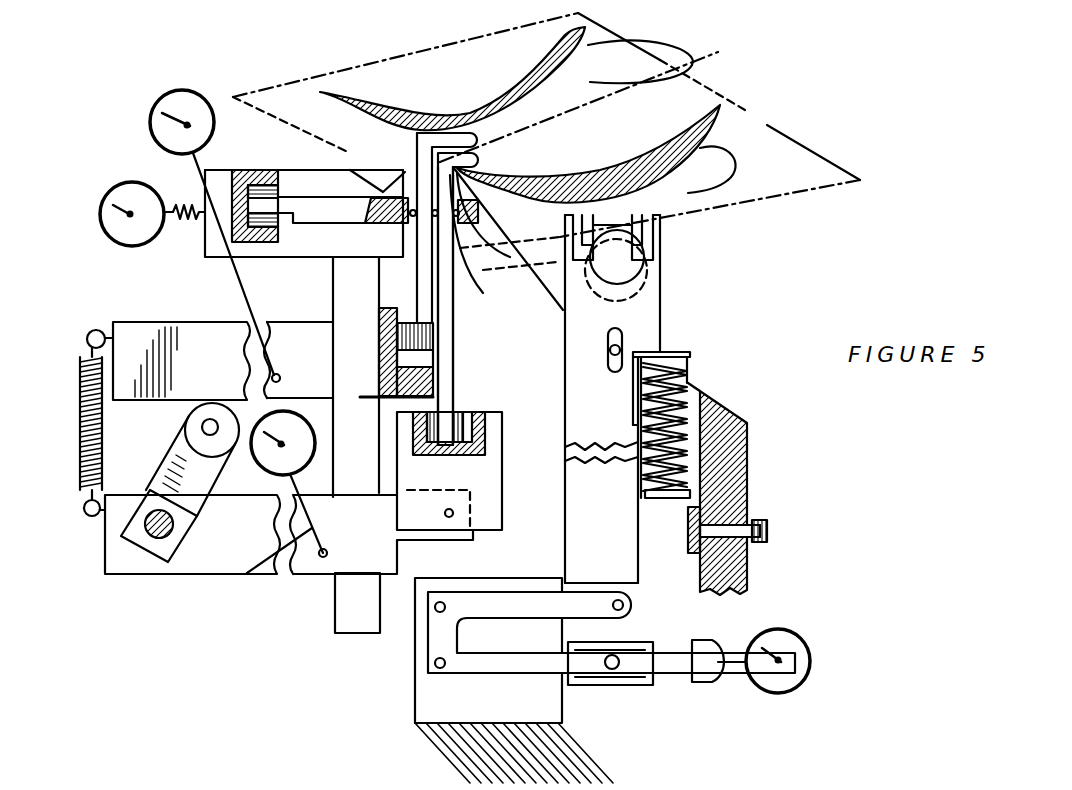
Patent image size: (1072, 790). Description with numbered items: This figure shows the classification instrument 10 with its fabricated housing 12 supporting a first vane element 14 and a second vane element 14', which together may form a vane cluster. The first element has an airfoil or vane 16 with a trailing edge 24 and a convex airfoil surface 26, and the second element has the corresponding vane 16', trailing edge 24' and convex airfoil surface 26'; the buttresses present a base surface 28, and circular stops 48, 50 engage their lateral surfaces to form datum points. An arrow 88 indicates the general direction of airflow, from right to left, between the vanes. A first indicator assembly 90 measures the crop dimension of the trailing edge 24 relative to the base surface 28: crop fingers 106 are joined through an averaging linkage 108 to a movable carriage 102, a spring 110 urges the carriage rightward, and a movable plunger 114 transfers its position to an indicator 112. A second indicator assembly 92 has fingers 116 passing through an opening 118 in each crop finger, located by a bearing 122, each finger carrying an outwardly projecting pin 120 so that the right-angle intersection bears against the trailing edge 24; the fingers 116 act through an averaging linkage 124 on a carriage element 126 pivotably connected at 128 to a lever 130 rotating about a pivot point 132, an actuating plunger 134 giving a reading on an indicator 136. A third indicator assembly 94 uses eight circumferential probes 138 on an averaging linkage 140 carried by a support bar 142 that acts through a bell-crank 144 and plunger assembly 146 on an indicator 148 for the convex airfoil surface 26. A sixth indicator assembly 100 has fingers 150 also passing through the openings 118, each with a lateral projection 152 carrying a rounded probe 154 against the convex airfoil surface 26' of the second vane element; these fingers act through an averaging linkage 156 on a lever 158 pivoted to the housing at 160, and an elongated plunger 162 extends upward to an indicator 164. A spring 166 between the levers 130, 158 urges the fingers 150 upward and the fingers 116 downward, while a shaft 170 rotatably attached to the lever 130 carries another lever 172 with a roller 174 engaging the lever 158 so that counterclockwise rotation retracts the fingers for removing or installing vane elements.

The classification instrument 10 is at (907, 197).
The fabricated housing 12 is at (749, 448).
The vane element 14 is at (653, 144).
The second vane element 14' is at (489, 81).
The airfoil or vane 16 is at (731, 157).
The second lens edge 16' is at (640, 36).
The trailing edge 24 is at (588, 181).
The second lens surface 24' is at (432, 78).
The convex airfoil surface 26 is at (728, 178).
The convex airfoil surface of the second vane element 26' is at (649, 61).
The base surface 28 is at (510, 257).
The circular stop 48 is at (648, 262).
The circular stop 50 is at (650, 287).
The arrow 88 is at (573, 135).
The first indicator assembly 90 is at (313, 178).
The second indicator assembly 92 is at (458, 412).
The third indicator assembly 94 is at (667, 331).
The sixth indicator assembly 100 is at (413, 292).
The movable carriage 102 is at (212, 249).
The crop fingers 106 is at (306, 228).
The averaging linkage 108 is at (256, 170).
The spring 110 is at (188, 208).
The indicator 112 is at (107, 198).
The movable plunger 114 is at (177, 221).
The fingers 116 is at (456, 333).
The opening 118 is at (387, 230).
The outwardly projecting pin 120 is at (478, 160).
The bearing 122 is at (506, 240).
The averaging linkage 124 is at (486, 424).
The carriage element 126 is at (483, 470).
The pivotable connection 128 is at (453, 513).
The lever 130 is at (203, 562).
The pivot point 132 is at (320, 560).
The actuating plunger 134 is at (252, 574).
The indicator 136 is at (262, 466).
The circumferential probes 138 is at (610, 212).
The averaging linkage 140 is at (656, 227).
The column break 142 is at (587, 432).
The bell-crank 144 is at (528, 603).
The plunger assembly 146 is at (593, 688).
The indicator 148 is at (803, 680).
The fingers 150 is at (415, 146).
The lateral projection 152 is at (558, 128).
The rounded probe 154 is at (456, 128).
The averaging linkage 156 is at (433, 347).
The lever 158 is at (140, 332).
The pivot 160 is at (281, 375).
The elongated plunger 162 is at (244, 303).
The indicator 164 is at (158, 101).
The spring 166 is at (80, 448).
The shaft 170 is at (145, 530).
The lever 172 is at (183, 462).
The roller 174 is at (186, 423).